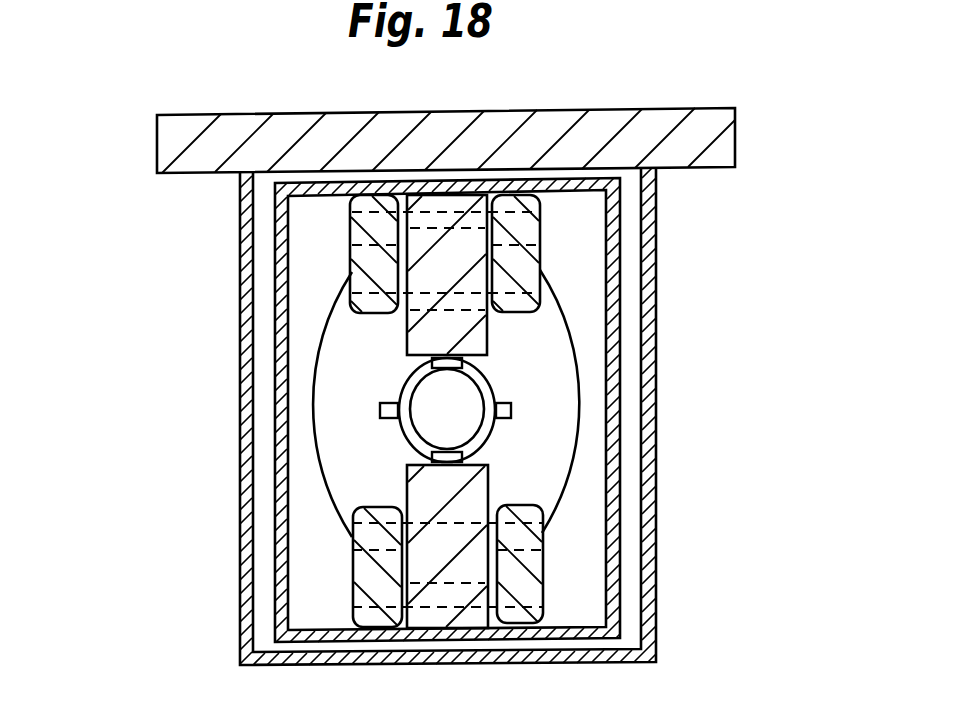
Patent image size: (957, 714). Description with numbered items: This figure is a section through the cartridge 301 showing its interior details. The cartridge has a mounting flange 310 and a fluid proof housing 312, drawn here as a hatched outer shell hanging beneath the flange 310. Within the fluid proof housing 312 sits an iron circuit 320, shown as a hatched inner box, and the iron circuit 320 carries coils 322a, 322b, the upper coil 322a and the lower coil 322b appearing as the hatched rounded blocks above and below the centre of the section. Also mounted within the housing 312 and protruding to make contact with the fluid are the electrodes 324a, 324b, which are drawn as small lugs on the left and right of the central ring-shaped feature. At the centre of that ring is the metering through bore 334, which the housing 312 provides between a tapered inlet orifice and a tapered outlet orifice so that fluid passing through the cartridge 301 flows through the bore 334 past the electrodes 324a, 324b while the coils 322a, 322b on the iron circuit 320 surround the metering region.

The electromagnetic actuator assembly 301 is at (162, 224).
The mounting plate 310 is at (695, 130).
The fluid proof housing 312 is at (240, 326).
The iron circuit 320 is at (293, 302).
The coil 322a is at (543, 262).
The coil 322b is at (510, 555).
The electrode 324a is at (511, 408).
The electrode 324b is at (380, 410).
The metering through bore 334 is at (438, 412).